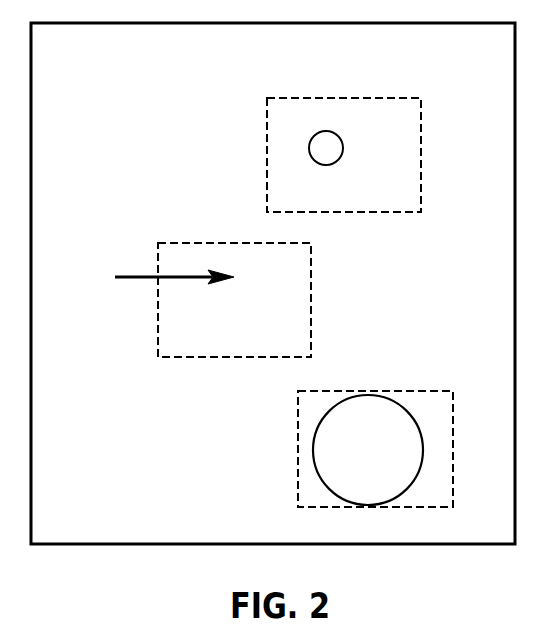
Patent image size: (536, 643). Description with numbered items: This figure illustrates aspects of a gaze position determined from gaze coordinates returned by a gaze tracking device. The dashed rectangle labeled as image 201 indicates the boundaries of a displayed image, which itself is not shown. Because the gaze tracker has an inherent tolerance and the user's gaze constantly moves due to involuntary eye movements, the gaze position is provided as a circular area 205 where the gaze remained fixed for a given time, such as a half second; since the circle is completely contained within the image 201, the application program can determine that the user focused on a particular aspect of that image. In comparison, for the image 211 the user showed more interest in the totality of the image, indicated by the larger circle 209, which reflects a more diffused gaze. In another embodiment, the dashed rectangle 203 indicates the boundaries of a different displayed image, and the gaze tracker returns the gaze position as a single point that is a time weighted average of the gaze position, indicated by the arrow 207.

The displayed image boundaries 201 is at (407, 140).
The different displayed image boundaries 203 is at (257, 330).
The gaze area 205 is at (317, 132).
The gaze point arrow 207 is at (143, 275).
The gaze circle 209 is at (387, 464).
The image 211 is at (298, 470).